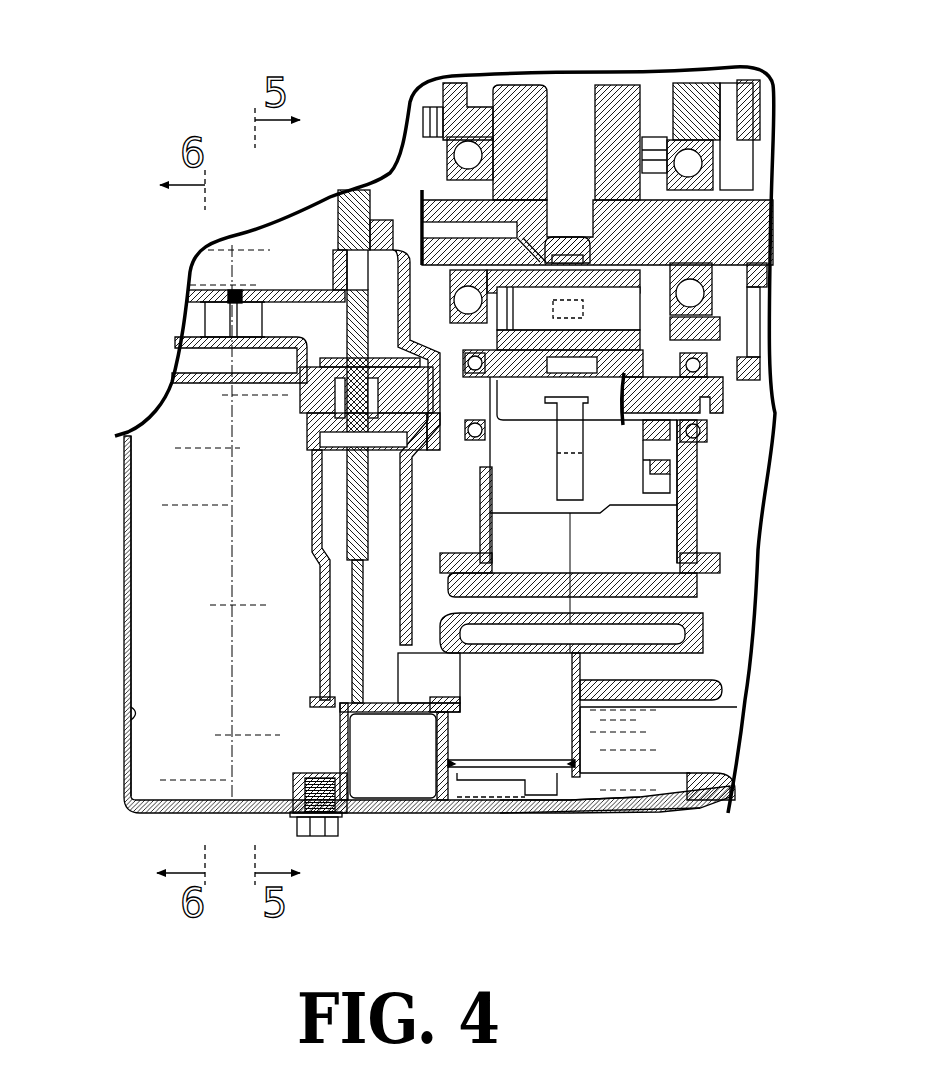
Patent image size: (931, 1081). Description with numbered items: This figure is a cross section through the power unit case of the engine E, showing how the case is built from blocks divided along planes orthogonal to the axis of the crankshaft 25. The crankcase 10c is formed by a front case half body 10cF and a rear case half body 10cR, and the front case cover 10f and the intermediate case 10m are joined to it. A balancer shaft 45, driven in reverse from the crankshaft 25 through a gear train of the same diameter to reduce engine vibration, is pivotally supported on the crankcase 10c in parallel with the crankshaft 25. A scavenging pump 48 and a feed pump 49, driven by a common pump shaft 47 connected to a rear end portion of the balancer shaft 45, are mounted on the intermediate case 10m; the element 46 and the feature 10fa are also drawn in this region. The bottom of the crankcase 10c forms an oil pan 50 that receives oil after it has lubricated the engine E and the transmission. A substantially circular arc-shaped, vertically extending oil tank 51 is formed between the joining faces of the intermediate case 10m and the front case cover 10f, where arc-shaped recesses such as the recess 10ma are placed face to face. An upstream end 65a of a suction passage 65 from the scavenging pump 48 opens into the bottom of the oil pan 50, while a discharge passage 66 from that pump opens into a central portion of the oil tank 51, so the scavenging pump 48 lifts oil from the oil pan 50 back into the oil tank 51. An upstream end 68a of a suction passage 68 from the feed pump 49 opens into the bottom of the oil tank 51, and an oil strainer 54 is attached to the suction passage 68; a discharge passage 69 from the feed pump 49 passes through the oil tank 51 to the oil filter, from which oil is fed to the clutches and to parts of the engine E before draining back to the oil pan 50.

The engine E is at (528, 94).
The spacer 46 is at (658, 136).
The crankshaft 25 is at (757, 226).
The discharge passage 66 is at (340, 275).
The discharge passage 69 is at (282, 327).
The pump shaft 47 is at (305, 415).
The feed pump 49 is at (330, 436).
The scavenging pump 48 is at (410, 442).
The balancer shaft 45 is at (603, 400).
The oil tank 51 is at (220, 566).
The suction passage 68 is at (335, 595).
The upstream end 68a is at (325, 705).
The suction passage 65 is at (378, 688).
The front wall projection 10fa is at (134, 716).
The oil strainer 54 is at (517, 751).
The upstream end 65a is at (657, 773).
The oil pan 50 is at (730, 783).
The front case cover 10f is at (168, 806).
The intermediate case 10m is at (273, 812).
The recess 10ma is at (342, 743).
The crankcase 10c is at (507, 880).
The front case half body 10cF is at (530, 820).
The rear case half body 10cR is at (600, 820).